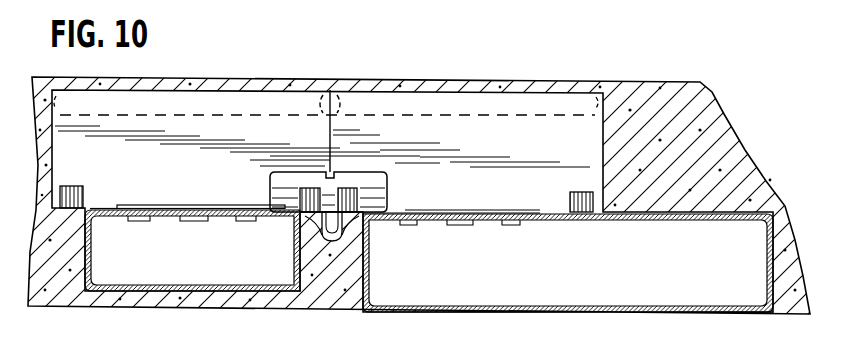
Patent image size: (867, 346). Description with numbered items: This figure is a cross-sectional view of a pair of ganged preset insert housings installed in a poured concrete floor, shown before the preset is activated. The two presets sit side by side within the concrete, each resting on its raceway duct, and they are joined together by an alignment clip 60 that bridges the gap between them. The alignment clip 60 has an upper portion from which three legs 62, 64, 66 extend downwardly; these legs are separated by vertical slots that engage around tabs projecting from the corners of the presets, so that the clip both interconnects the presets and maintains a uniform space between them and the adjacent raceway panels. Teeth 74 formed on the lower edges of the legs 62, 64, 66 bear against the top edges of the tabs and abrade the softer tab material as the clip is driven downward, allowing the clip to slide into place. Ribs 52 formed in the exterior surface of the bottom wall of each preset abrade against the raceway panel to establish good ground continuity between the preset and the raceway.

The ribs 52 is at (537, 217).
The alignment clip 60 is at (373, 190).
The leg 62 is at (283, 204).
The leg 64 is at (310, 228).
The leg 66 is at (382, 202).
The teeth 74 is at (333, 241).